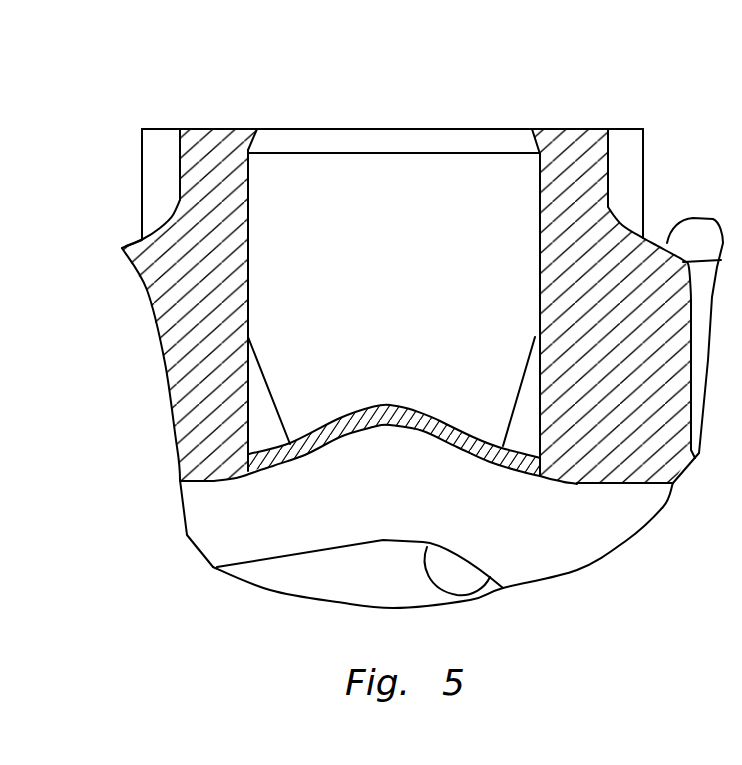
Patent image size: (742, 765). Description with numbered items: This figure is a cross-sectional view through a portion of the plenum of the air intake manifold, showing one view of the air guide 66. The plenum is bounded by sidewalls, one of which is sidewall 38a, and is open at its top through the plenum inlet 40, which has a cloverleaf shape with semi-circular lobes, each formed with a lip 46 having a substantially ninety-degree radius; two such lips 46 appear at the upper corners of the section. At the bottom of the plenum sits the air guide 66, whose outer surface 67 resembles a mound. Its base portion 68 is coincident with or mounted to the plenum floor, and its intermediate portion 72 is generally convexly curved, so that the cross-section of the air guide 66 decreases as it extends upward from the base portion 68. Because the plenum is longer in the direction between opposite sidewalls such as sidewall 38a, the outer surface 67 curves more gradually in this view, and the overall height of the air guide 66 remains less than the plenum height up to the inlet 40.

The sidewall 38a is at (253, 214).
The plenum inlet 40 is at (391, 120).
The lip 46 is at (258, 136).
The air guide 66 is at (400, 295).
The outer surface 67 is at (460, 395).
The base portion 68 is at (279, 450).
The intermediate portion 72 is at (341, 419).